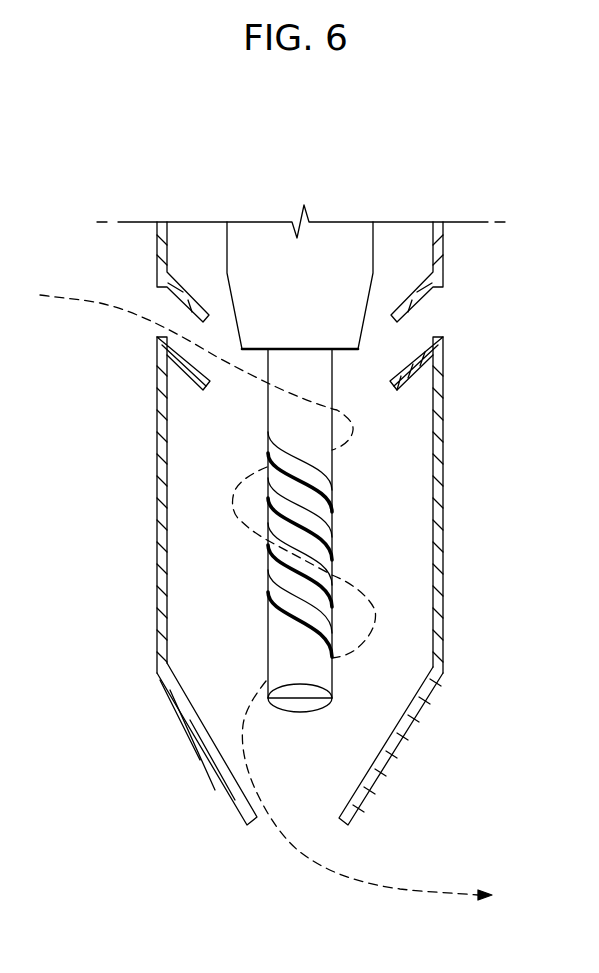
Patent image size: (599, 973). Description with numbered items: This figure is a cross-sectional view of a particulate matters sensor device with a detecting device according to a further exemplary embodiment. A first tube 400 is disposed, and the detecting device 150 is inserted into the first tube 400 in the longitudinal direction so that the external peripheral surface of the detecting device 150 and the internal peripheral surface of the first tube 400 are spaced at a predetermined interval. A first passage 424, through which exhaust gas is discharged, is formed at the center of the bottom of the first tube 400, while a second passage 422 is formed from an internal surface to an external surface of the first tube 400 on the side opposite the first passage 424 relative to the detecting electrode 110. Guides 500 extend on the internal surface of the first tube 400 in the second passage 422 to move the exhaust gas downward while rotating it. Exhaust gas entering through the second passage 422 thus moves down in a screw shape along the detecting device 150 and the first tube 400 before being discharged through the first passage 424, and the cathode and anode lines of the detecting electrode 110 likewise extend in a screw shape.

The detecting electrode 110 is at (298, 622).
The detecting device 150 is at (346, 527).
The first tube 400 is at (443, 503).
The second passage 422 is at (438, 307).
The first passage 424 is at (272, 822).
The guides 500 is at (410, 358).